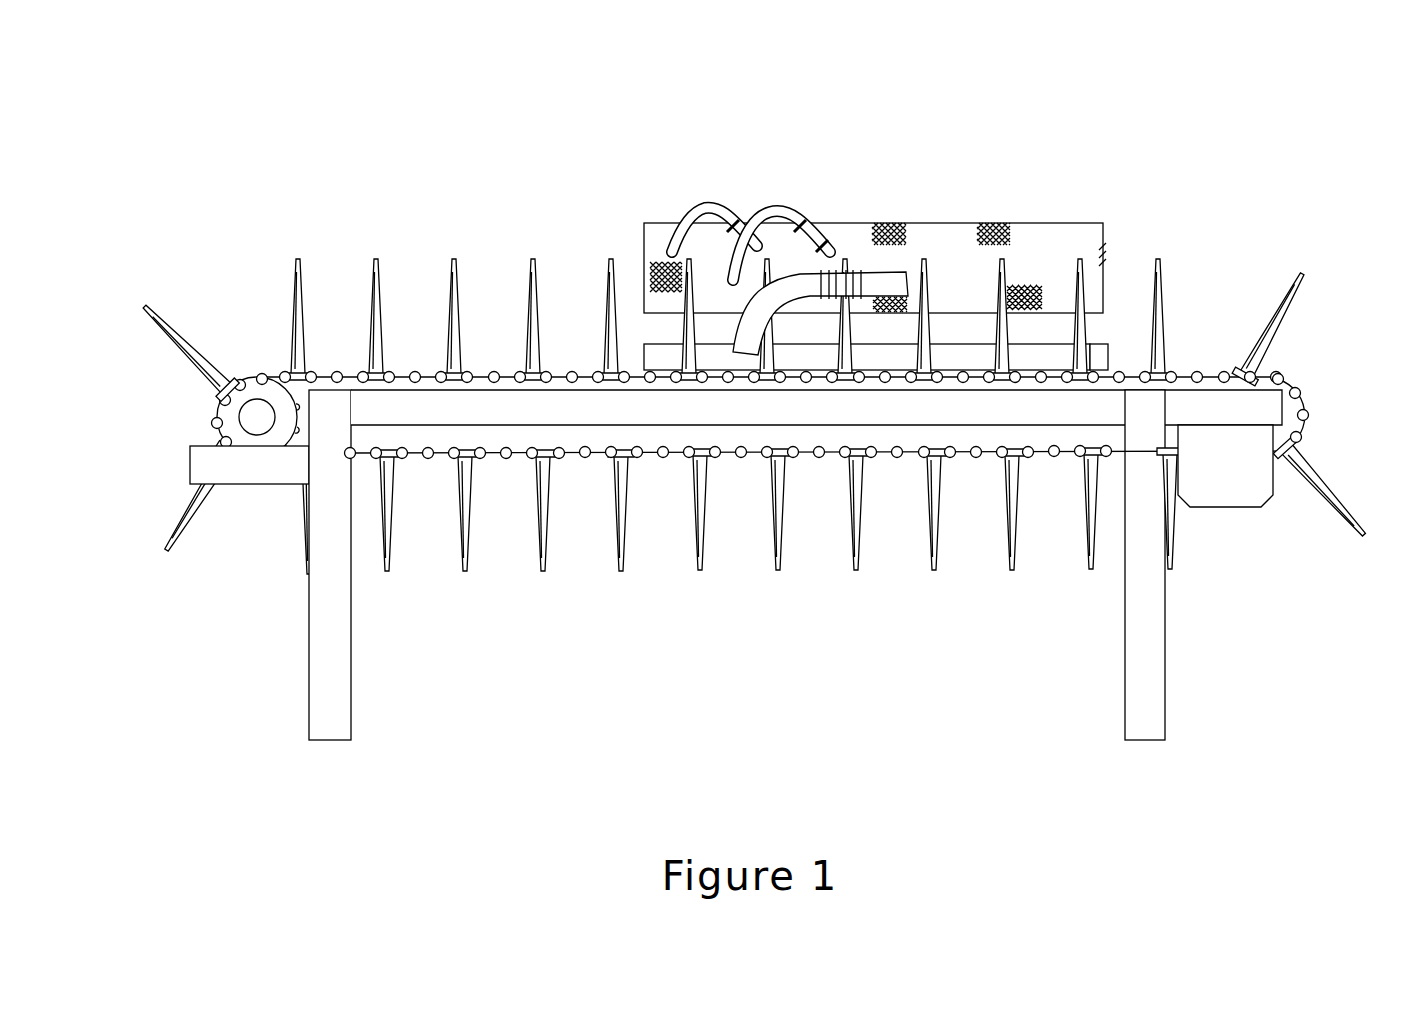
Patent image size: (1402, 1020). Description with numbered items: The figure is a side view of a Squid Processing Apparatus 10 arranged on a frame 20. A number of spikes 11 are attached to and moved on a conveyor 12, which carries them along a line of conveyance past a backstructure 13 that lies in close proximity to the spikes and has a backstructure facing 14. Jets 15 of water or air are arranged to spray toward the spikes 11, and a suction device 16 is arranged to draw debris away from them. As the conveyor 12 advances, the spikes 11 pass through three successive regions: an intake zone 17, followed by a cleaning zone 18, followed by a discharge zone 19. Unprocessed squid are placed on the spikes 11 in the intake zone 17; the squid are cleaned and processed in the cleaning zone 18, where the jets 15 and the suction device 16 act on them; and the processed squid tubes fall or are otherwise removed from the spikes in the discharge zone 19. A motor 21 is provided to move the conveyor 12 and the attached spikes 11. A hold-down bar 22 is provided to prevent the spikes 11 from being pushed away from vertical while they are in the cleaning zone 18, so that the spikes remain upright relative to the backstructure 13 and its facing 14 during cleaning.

The Squid Processing Apparatus 10 is at (250, 153).
The spikes 11 is at (297, 258).
The conveyor 12 is at (272, 373).
The backstructure 13 is at (917, 222).
The backstructure facing 14 is at (940, 245).
The jets 15 is at (766, 210).
The suction device 16 is at (838, 268).
The intake zone 17 is at (461, 140).
The cleaning zone 18 is at (816, 140).
The discharge zone 19 is at (1222, 138).
The frame 20 is at (332, 637).
The motor 21 is at (1248, 498).
The hold-down bar 22 is at (1099, 352).